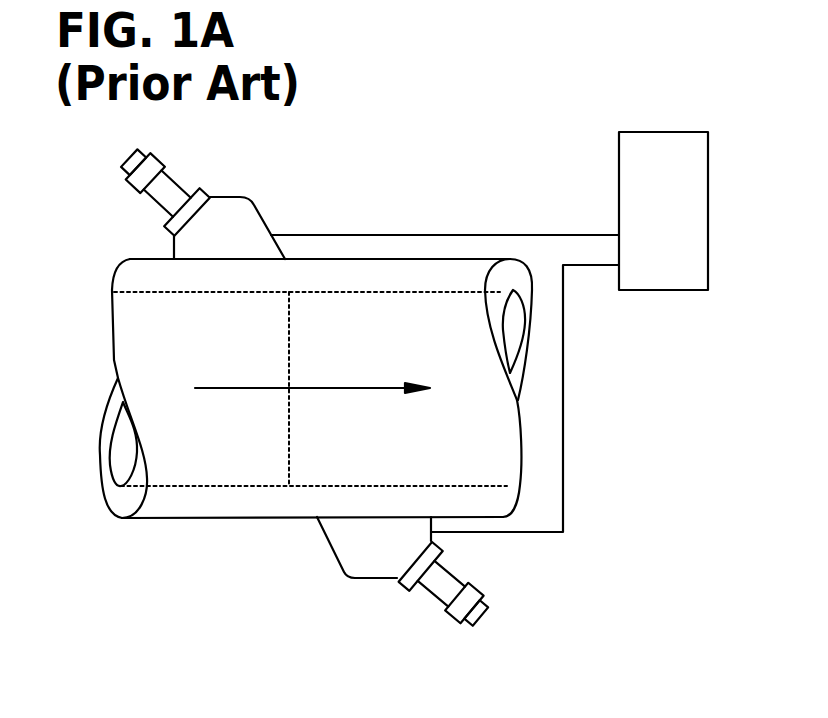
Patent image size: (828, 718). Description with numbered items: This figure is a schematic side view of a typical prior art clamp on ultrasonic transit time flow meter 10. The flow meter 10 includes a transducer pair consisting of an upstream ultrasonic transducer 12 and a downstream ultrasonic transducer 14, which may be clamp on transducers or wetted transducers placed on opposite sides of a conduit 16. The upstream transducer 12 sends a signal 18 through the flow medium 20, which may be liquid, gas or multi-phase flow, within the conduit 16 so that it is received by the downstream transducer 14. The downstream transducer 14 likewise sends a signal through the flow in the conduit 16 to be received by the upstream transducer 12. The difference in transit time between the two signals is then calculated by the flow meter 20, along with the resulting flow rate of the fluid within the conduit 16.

The flow meter 10 is at (406, 141).
The upstream ultrasonic transducer 12 is at (241, 164).
The downstream ultrasonic transducer 14 is at (472, 553).
The conduit 16 is at (524, 285).
The signal 18 is at (290, 342).
The flow medium / flow meter 20 is at (648, 132).